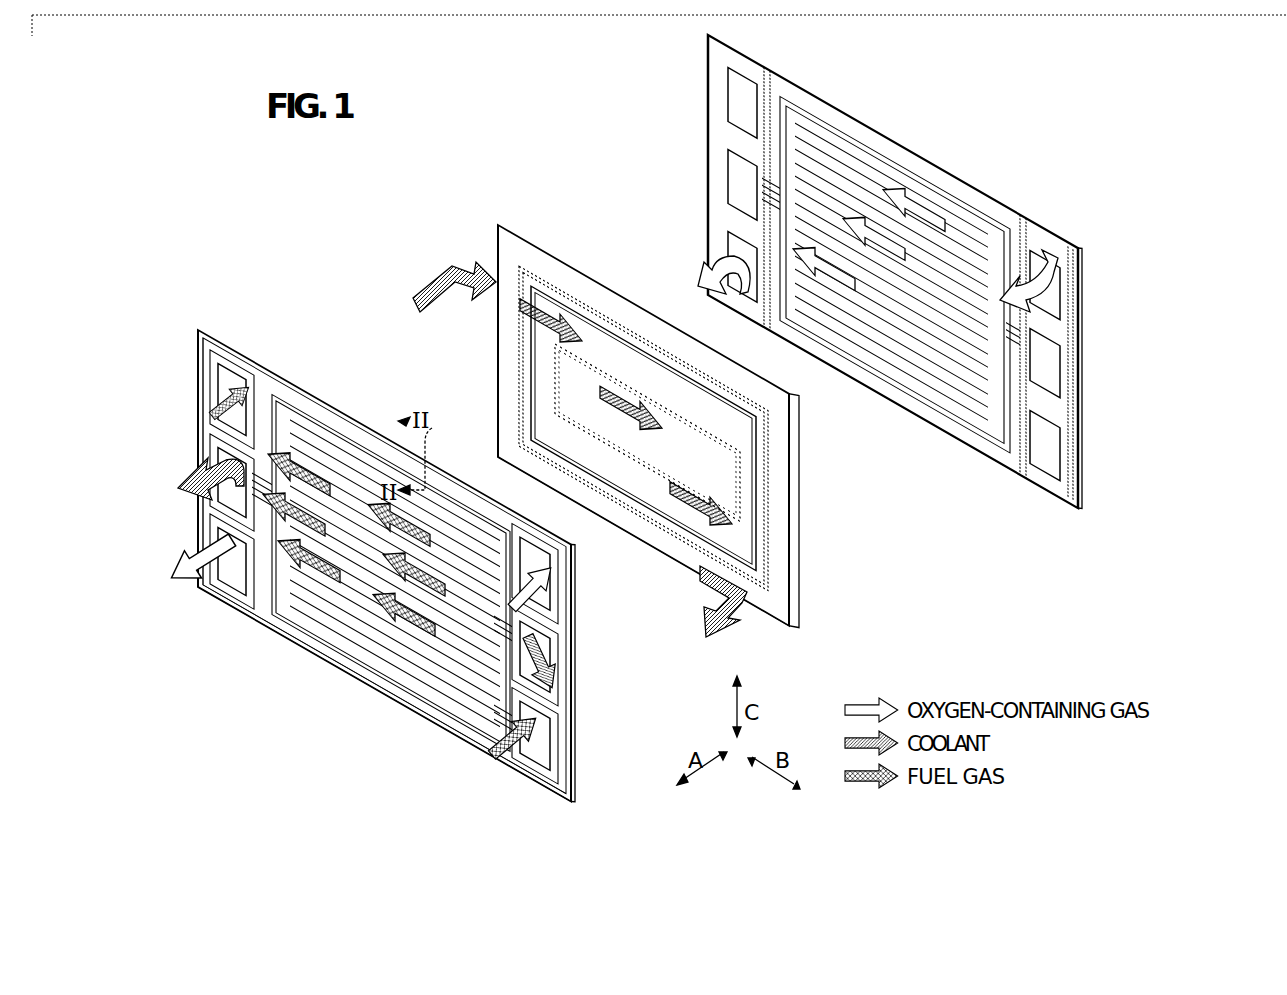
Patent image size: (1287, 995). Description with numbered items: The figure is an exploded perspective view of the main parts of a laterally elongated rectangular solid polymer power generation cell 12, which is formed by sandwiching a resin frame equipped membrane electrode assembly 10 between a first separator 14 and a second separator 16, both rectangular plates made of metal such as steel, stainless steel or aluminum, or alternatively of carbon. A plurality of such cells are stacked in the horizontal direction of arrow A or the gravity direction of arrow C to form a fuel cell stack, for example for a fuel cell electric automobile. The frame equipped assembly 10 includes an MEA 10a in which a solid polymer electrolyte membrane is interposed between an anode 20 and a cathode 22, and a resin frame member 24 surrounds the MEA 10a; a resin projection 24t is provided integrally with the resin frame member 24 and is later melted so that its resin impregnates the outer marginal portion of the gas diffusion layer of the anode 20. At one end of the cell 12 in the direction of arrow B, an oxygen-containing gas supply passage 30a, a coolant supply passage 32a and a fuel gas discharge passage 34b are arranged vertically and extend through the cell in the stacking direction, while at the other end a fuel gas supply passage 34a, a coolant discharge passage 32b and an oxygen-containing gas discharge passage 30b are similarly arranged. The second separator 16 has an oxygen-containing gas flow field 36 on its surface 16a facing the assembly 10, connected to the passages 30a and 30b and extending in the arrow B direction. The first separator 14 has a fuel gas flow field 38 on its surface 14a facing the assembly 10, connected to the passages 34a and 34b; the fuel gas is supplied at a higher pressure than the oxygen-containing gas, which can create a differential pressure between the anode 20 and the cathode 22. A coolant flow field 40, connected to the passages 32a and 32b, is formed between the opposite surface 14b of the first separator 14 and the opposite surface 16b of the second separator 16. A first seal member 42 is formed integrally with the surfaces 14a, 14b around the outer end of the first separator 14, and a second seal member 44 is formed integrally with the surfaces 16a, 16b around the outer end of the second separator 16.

The resin frame equipped membrane electrode assembly 10 is at (498, 232).
The MEA 10a is at (623, 488).
The power generation cell 12 is at (447, 159).
The first separator 14 is at (206, 328).
The surface of the first separator 14a is at (218, 592).
The surface of the first separator 14b is at (241, 600).
The second separator 16 is at (705, 42).
The surface of the second separator 16a is at (1048, 490).
The surface of the second separator 16b is at (1068, 500).
The anode 20 is at (558, 406).
The cathode 22 is at (626, 365).
The resin frame member 24 is at (551, 240).
The resin projection 24t is at (770, 511).
The oxygen-containing gas supply passage 30a is at (546, 600).
The oxygen-containing gas discharge passage 30b is at (228, 535).
The coolant supply passage 32a is at (549, 648).
The coolant discharge passage 32b is at (228, 462).
The fuel gas supply passage 34a is at (232, 378).
The fuel gas discharge passage 34b is at (546, 728).
The oxygen-containing gas flow field 36 is at (861, 180).
The fuel gas flow field 38 is at (345, 452).
The coolant flow field 40 is at (320, 605).
The first seal member 42 is at (289, 380).
The second seal member 44 is at (716, 200).